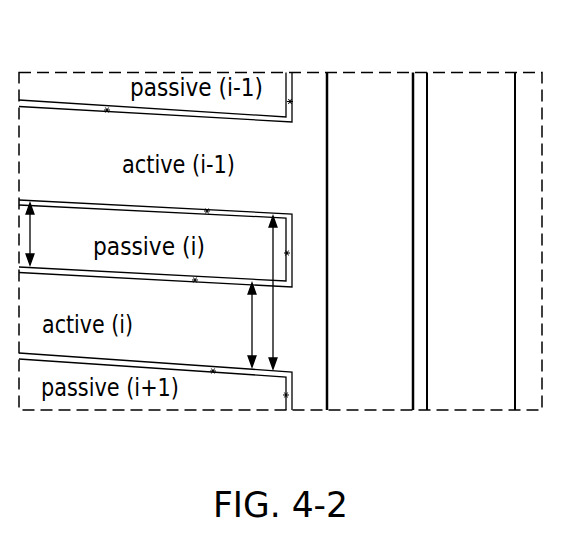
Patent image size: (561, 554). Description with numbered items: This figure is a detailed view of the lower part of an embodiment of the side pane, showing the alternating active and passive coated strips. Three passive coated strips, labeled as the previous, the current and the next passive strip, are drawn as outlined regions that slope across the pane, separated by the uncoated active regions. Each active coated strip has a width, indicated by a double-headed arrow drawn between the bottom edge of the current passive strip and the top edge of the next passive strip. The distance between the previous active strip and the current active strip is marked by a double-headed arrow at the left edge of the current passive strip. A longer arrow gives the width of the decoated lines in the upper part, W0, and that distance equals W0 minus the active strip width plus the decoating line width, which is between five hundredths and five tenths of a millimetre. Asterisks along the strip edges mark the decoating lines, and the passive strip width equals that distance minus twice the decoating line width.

The width of the decoated lines in the upper part W0 is at (273, 292).